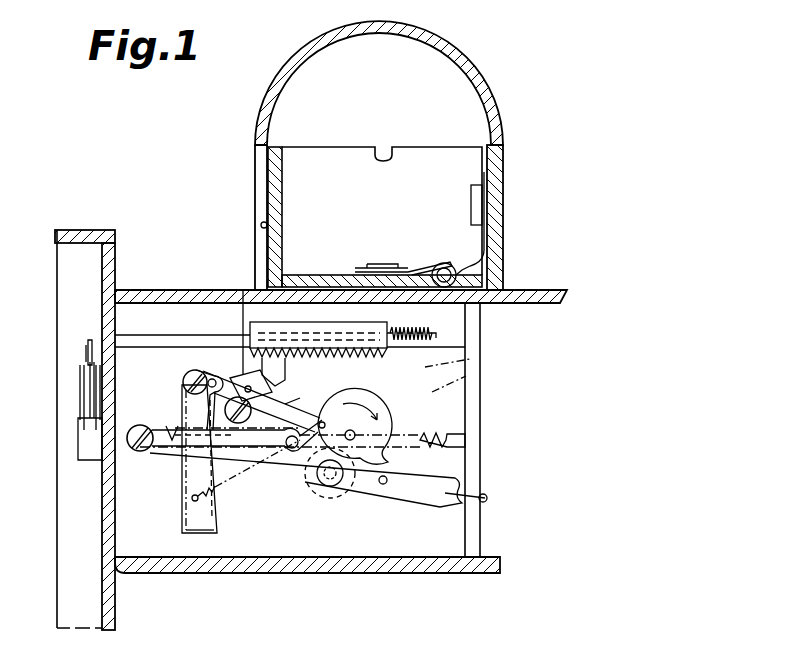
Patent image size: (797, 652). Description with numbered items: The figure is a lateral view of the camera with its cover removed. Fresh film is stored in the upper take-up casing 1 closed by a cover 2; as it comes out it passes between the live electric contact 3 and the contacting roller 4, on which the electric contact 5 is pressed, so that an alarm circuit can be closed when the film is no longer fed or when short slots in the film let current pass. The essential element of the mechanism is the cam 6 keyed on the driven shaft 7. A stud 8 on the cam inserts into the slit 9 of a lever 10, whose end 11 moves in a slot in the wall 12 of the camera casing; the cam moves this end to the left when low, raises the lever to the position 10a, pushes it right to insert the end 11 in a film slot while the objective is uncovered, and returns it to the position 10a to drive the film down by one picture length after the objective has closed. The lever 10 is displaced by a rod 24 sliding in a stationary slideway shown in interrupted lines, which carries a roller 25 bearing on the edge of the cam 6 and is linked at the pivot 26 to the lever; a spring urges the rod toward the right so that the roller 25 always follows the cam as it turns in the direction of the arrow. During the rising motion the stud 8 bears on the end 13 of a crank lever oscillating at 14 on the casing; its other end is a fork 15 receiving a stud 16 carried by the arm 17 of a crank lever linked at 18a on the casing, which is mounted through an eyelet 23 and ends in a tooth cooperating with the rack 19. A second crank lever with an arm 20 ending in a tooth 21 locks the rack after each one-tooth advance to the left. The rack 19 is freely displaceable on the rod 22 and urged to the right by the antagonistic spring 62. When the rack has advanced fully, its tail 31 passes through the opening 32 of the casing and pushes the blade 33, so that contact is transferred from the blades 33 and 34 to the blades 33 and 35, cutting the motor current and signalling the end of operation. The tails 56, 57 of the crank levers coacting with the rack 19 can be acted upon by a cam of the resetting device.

The take-up casing 1 is at (352, 153).
The cover 2 is at (458, 60).
The live electric contact 3 is at (436, 260).
The contacting roller 4 is at (452, 268).
The electric contact 5 is at (468, 268).
The cam 6 is at (390, 424).
The shaft 7 is at (357, 402).
The stud 8 is at (338, 486).
The slit 9 is at (382, 485).
The lever 10 is at (437, 500).
The position of the lever 10a is at (447, 383).
The end of the lever 11 is at (487, 499).
The wall 12 is at (487, 468).
The end of the crank lever 13 is at (300, 398).
The oscillation axis 14 is at (251, 413).
The fork 15 is at (242, 322).
The stud 16 is at (262, 391).
The arm 17 is at (273, 389).
The link pivot 18a is at (212, 372).
The rack 19 is at (320, 335).
The arm 20 is at (233, 366).
The tooth 21 is at (278, 373).
The rod 22 is at (460, 345).
The eyelet 23 is at (200, 392).
The rod 24 is at (268, 444).
The roller 25 is at (324, 425).
The pivot 26 is at (145, 450).
The tail 31 is at (215, 345).
The opening 32 is at (92, 350).
The blade 33 is at (85, 348).
The blade 34 is at (95, 398).
The blade 35 is at (80, 385).
The tail 56 is at (212, 528).
The tail 57 is at (176, 526).
The antagonistic spring 62 is at (402, 270).